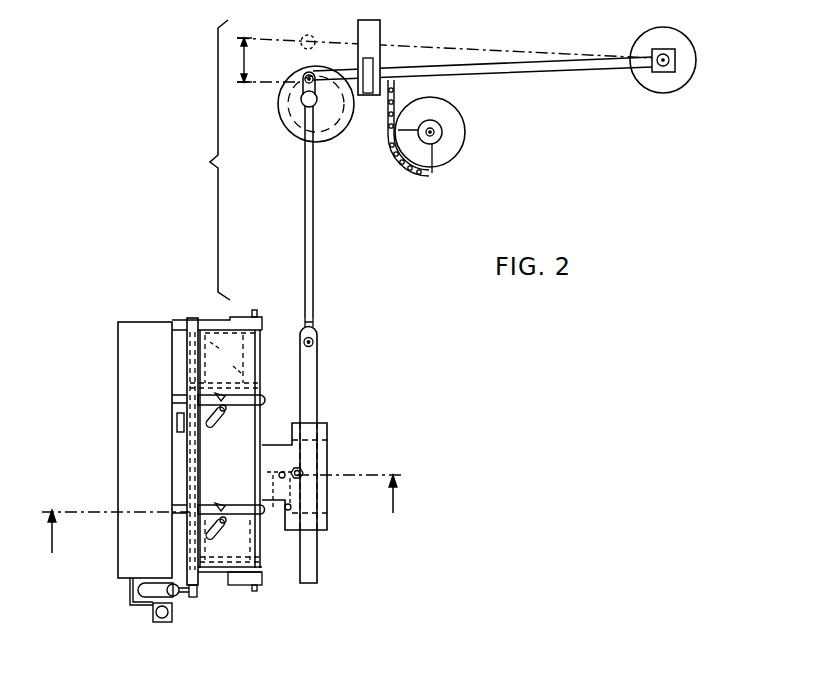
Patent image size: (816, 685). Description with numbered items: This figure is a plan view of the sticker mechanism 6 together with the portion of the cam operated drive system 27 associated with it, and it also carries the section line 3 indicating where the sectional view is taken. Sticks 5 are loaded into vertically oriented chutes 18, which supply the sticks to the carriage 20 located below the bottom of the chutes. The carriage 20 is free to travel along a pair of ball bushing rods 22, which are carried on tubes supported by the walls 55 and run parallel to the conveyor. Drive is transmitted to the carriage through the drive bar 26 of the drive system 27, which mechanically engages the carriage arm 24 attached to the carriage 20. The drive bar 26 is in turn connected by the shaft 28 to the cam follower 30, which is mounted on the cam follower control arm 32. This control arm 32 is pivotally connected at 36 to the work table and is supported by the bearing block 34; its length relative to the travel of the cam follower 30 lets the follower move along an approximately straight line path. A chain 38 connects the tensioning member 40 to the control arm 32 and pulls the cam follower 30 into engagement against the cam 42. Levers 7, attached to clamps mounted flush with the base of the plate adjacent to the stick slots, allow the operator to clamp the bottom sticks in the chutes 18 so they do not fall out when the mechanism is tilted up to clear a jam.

The section line 3- 3 is at (222, 528).
The sticks 5 is at (210, 401).
The sticker mechanism 6 is at (118, 387).
The levers 7 is at (217, 432).
The chutes 18 is at (225, 402).
The carriage 20 is at (240, 551).
The ball bushing rods 22 is at (225, 357).
The carriage arm 24 is at (322, 518).
The drive bar 26 is at (312, 370).
The cam operated drive system 27 is at (206, 160).
The shaft 28 is at (314, 232).
The cam follower 30 is at (303, 75).
The cam follower control arm 32 is at (532, 70).
The bearing block 34 is at (380, 30).
The pivotal connection 36 is at (677, 62).
The chain 38 is at (388, 113).
The tensioning member 40 is at (450, 138).
The cam 42 is at (279, 103).
The walls 55 is at (183, 318).